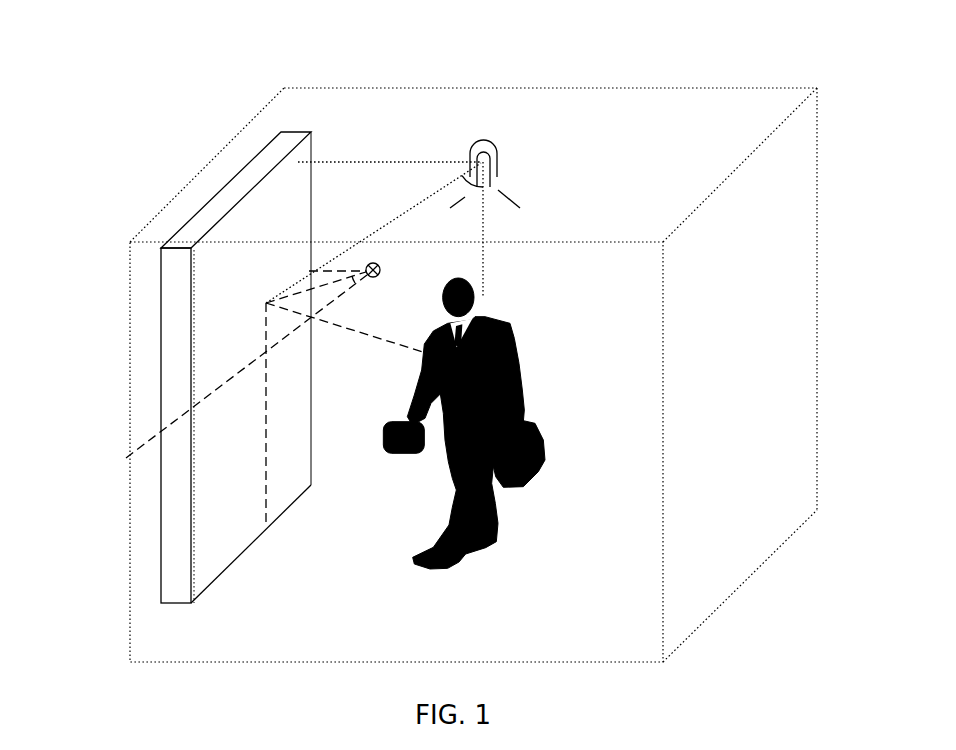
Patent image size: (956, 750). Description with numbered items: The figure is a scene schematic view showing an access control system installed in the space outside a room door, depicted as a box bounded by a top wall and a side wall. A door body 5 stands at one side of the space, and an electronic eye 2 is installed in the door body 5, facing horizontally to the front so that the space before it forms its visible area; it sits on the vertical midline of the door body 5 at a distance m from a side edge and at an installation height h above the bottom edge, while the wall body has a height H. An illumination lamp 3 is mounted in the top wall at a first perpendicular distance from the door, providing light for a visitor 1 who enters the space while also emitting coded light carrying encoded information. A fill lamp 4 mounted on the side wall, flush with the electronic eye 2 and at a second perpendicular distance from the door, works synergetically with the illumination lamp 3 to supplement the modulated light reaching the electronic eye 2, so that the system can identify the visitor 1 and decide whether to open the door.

The visitor 1 is at (622, 299).
The electronic eye 2 is at (274, 333).
The illumination lamp 3 is at (559, 114).
The fill lamp 4 is at (330, 148).
The door body 5 is at (174, 367).